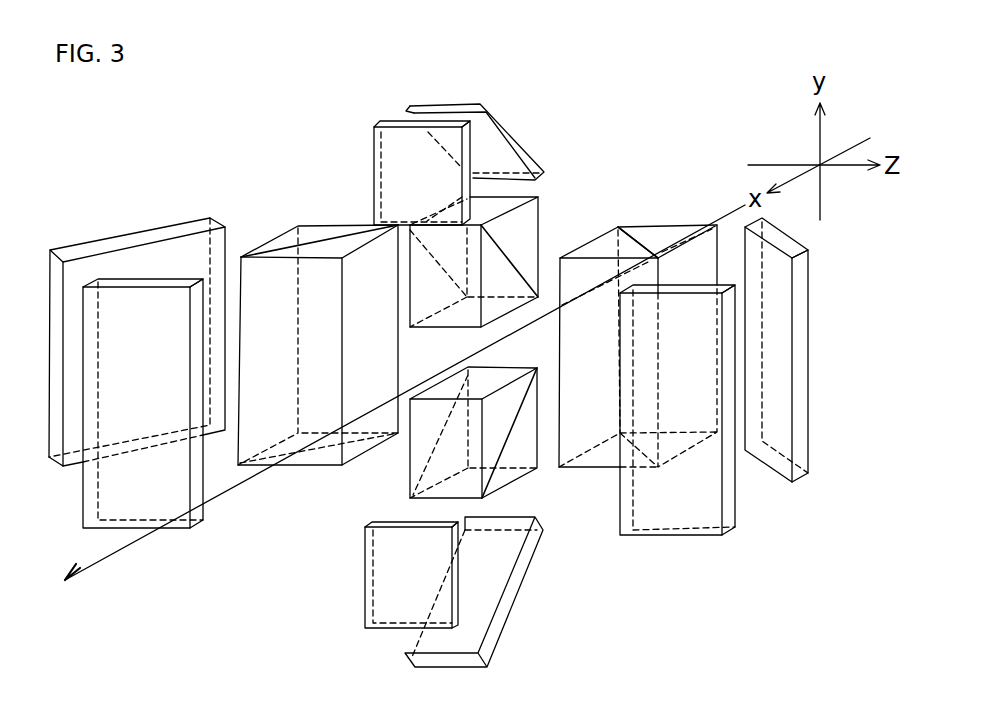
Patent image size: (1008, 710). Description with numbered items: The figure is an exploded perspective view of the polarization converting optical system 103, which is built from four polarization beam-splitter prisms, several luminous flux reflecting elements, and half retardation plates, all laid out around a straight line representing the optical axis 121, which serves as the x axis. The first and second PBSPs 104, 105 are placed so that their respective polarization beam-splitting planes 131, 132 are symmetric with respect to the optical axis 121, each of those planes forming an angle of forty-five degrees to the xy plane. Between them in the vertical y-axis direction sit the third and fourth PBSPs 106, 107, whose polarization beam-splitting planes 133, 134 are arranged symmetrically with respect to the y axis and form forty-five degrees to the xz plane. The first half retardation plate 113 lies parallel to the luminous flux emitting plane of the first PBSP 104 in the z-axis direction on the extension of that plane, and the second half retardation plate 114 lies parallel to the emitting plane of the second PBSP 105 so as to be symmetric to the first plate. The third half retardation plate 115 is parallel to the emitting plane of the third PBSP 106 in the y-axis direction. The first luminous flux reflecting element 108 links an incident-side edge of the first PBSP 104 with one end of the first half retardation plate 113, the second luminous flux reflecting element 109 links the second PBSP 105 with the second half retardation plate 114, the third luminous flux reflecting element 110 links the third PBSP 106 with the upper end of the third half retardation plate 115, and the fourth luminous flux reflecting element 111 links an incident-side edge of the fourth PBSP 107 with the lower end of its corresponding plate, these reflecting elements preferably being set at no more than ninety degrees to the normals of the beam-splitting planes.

The polarization converting optical system 103 is at (678, 608).
The first polarization beam-splitter prism 104 is at (640, 223).
The second polarization beam-splitter prism 105 is at (275, 233).
The third polarization beam-splitter prism 106 is at (538, 196).
The fourth polarization beam-splitter prism 107 is at (410, 495).
The first luminous flux reflecting element 108 is at (808, 337).
The second luminous flux reflecting element 109 is at (102, 240).
The third luminous flux reflecting element 110 is at (408, 108).
The fourth luminous flux reflecting element 111 is at (503, 637).
The first half retardation plate 113 is at (736, 520).
The second half retardation plate 114 is at (203, 520).
The third half retardation plate 115 is at (374, 147).
The optical axis 121 is at (112, 548).
The polarization beam-splitting plane 131 is at (653, 252).
The polarization beam-splitting plane 132 is at (337, 234).
The polarization beam-splitting plane 133 is at (508, 256).
The polarization beam-splitting plane 134 is at (490, 477).